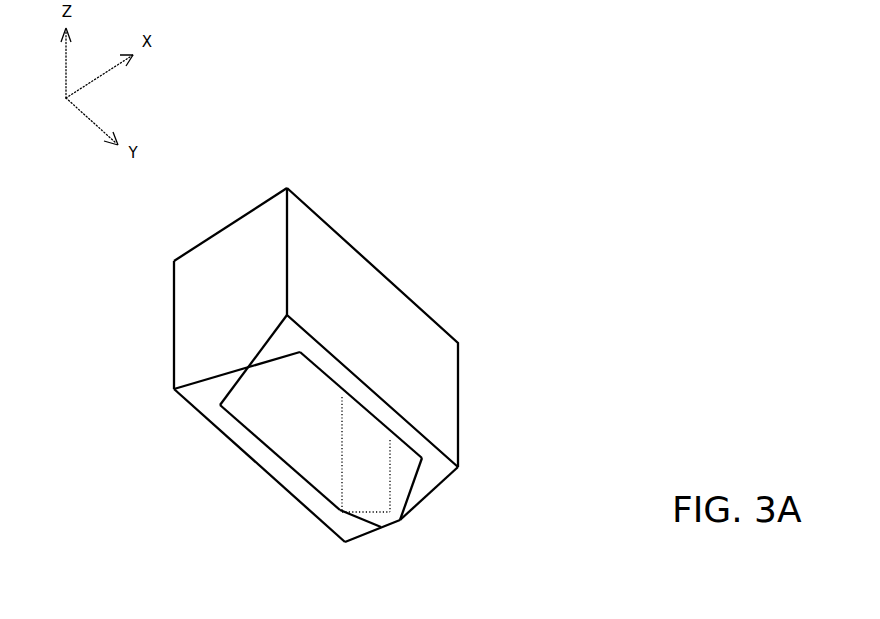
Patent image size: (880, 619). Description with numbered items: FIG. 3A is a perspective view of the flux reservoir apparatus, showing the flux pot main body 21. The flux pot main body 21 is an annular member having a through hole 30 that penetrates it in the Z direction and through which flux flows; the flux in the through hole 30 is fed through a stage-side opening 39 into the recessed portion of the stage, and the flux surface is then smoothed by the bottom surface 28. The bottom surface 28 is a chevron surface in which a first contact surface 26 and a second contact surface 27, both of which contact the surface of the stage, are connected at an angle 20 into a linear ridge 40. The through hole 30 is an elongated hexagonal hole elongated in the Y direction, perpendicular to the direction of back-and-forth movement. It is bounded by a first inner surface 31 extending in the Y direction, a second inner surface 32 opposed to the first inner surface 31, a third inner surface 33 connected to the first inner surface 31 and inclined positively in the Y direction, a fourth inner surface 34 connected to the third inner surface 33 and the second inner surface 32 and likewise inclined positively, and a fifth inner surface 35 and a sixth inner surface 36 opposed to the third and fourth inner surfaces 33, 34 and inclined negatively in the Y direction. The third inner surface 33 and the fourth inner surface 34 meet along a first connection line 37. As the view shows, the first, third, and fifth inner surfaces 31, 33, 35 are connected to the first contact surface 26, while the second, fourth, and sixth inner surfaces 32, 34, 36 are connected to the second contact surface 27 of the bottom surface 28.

The angle 20 is at (422, 273).
The flux pot main body 21 is at (429, 341).
The first contact surface 26 is at (198, 402).
The second contact surface 27 is at (292, 338).
The bottom surface 28 is at (435, 469).
The through hole 30 is at (268, 407).
The first inner surface 31 is at (312, 472).
The second inner surface 32 is at (348, 401).
The third inner surface 33 is at (360, 534).
The fourth inner surface 34 is at (413, 510).
The fifth inner surface 35 is at (222, 393).
The sixth inner surface 36 is at (243, 388).
The first connection line 37 is at (395, 516).
The stage-side opening 39 is at (287, 427).
The linear ridge 40 is at (246, 358).